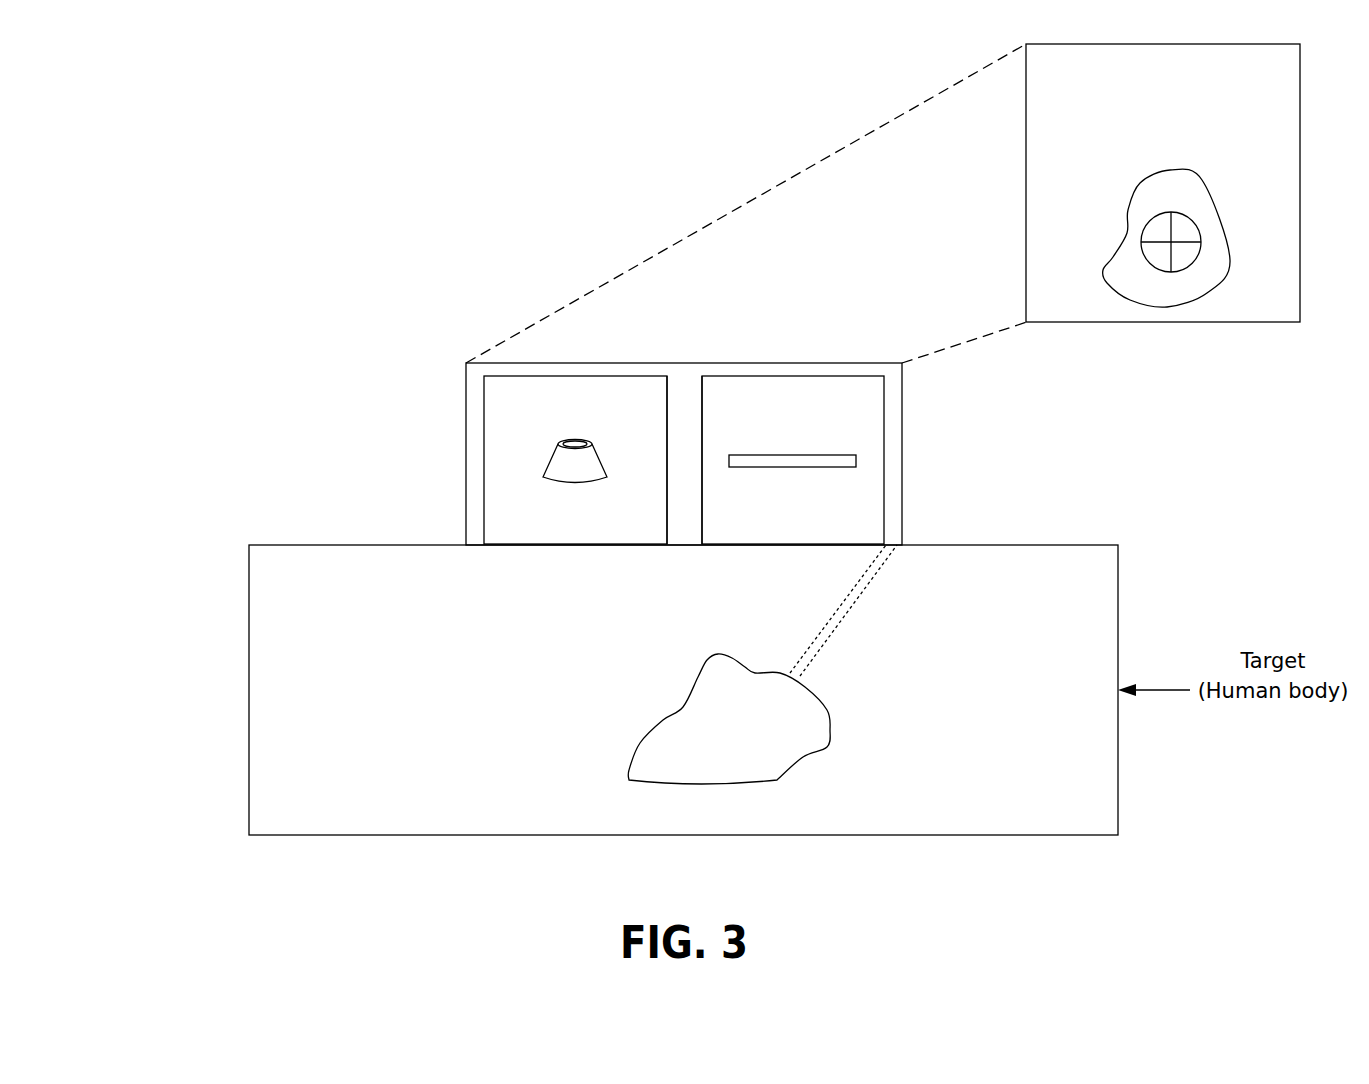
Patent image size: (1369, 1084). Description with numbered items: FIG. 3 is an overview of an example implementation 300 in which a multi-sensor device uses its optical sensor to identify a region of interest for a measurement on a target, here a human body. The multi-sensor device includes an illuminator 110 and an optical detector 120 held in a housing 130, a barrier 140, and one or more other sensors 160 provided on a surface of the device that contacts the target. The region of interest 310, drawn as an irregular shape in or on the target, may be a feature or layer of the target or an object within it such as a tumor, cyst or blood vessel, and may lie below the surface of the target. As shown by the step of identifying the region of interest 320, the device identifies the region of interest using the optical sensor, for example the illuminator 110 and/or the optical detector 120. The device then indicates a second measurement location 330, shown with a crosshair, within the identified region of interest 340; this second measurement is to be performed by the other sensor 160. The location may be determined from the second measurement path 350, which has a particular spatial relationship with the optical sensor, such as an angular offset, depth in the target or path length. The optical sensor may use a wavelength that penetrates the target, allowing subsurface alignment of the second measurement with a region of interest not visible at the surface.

The example implementation 300 is at (172, 65).
The illuminator 110 is at (558, 457).
The optical detector 120 is at (812, 455).
The housing 130 is at (484, 399).
The barrier 140 is at (667, 519).
The other sensor 160 is at (888, 545).
The region of interest 310 is at (803, 773).
The identifying the region of interest using the optical sensor 320 is at (1163, 183).
The location for the second measurement 330 is at (1148, 282).
The region of interest 340 is at (1210, 307).
The path of the second measurement 350 is at (868, 612).